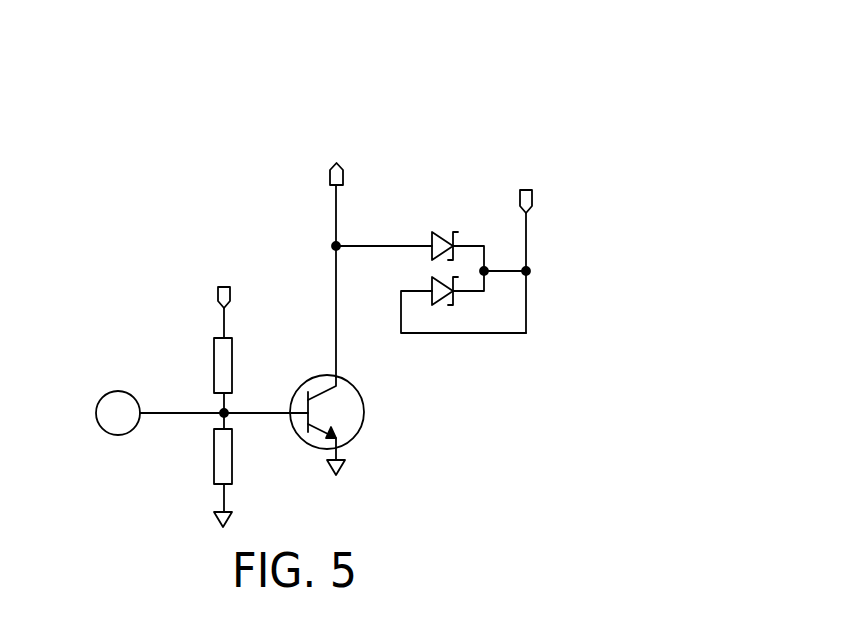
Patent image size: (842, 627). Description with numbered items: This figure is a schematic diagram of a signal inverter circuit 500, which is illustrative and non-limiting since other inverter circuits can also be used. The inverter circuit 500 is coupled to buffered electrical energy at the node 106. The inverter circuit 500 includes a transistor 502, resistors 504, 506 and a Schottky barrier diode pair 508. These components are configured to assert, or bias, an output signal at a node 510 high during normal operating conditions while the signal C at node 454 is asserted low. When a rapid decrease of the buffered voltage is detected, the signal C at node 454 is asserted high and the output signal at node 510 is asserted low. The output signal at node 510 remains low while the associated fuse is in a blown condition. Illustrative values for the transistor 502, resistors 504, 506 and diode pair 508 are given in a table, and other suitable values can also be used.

The signal inverter circuit 500 is at (478, 54).
The node 454 is at (98, 403).
The resistor 504 is at (232, 345).
The resistor 506 is at (232, 466).
The transistor 502 is at (360, 402).
The node 510 is at (343, 172).
The node 106 is at (532, 197).
The Schottky barrier diode pair 508 is at (466, 344).